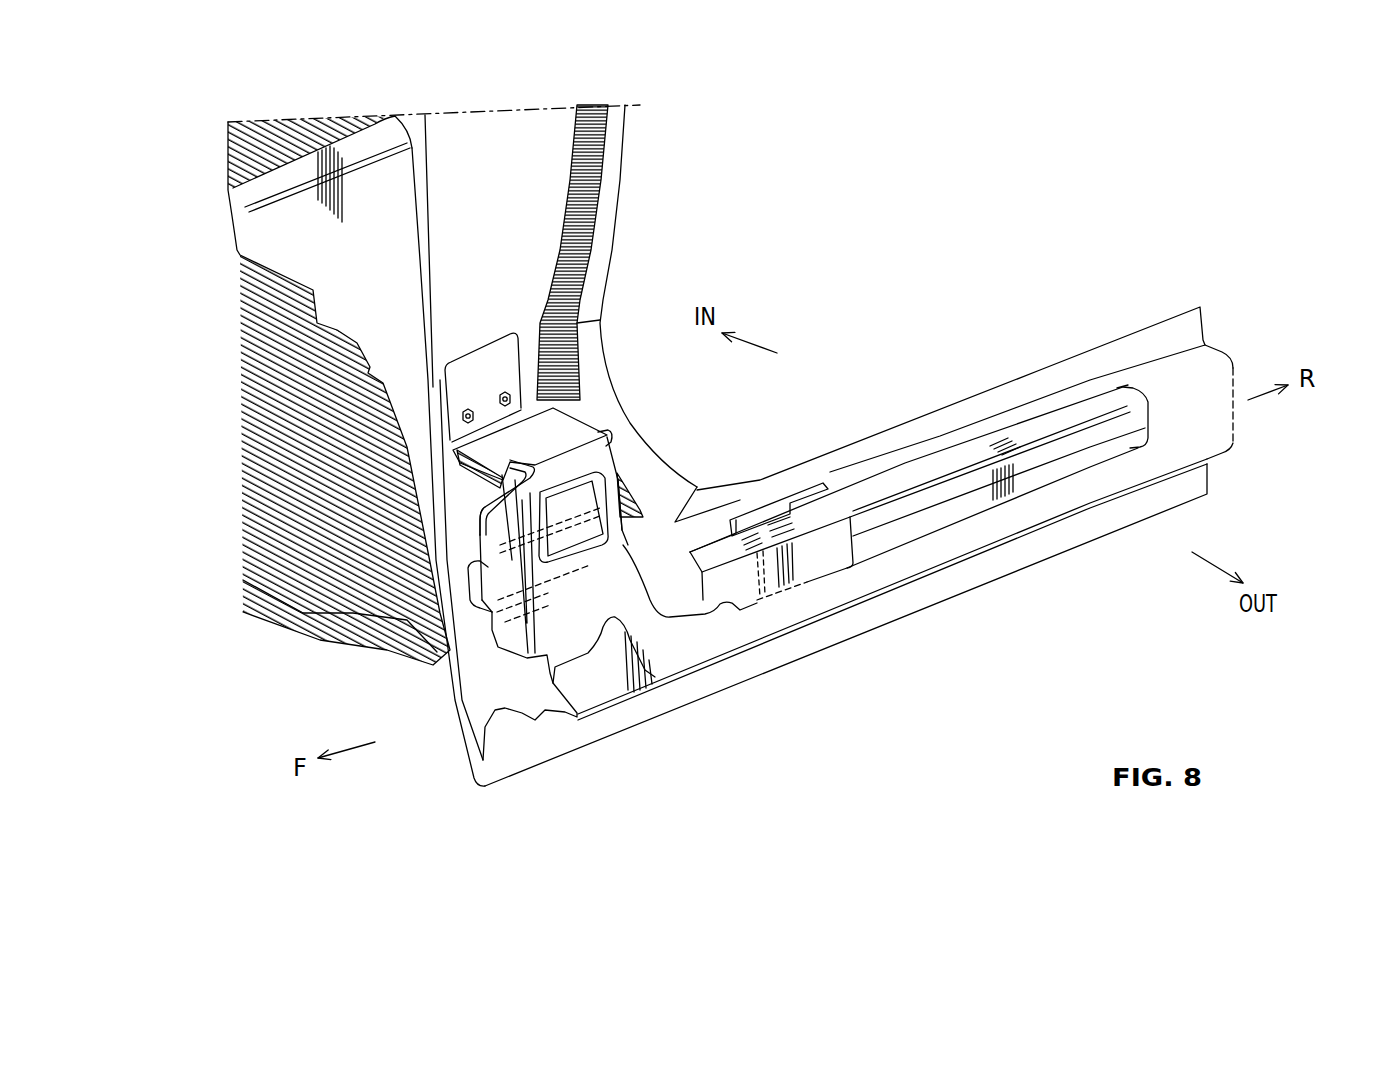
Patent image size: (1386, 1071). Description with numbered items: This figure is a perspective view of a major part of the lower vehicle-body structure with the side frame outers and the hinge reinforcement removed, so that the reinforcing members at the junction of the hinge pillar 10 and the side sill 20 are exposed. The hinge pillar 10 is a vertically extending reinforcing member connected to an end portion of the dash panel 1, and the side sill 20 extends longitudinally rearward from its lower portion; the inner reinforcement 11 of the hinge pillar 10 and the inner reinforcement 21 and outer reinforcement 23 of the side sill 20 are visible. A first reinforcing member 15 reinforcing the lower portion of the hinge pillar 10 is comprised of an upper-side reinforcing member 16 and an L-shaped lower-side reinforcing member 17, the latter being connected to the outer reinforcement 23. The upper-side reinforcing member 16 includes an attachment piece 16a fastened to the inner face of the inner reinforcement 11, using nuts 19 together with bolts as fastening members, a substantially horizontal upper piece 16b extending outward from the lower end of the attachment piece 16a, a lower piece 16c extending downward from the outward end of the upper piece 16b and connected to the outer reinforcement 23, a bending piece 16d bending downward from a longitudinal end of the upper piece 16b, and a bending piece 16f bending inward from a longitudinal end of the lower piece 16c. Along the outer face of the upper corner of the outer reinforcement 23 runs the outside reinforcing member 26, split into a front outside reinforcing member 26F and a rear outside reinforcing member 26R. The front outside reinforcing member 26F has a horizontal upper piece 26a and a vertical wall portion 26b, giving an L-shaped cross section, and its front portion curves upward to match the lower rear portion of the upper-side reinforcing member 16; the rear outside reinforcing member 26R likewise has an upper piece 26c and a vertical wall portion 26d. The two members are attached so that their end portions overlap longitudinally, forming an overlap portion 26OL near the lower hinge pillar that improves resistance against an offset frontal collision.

The dash panel 1 is at (258, 345).
The hinge pillar 10 is at (630, 172).
The inner reinforcement 11 is at (476, 270).
The first reinforcing member 15 is at (466, 530).
The upper-side reinforcing member 16 is at (573, 410).
The attachment piece 16a is at (473, 362).
The upper piece 16b is at (462, 450).
The lower piece 16c is at (613, 490).
The bending piece 16d is at (445, 488).
The bending piece 16f is at (493, 532).
The lower-side reinforcing member 17 is at (483, 614).
The nut 19 is at (467, 408).
The side sill 20 is at (1059, 360).
The inner reinforcement 21 is at (670, 474).
The outer reinforcement 23 is at (896, 568).
The outside reinforcing member 26 is at (818, 362).
The front outside reinforcing member 26F is at (790, 512).
The rear outside reinforcing member 26R is at (905, 463).
The upper piece 26a is at (717, 553).
The vertical wall portion 26b is at (746, 593).
The upper piece 26c is at (982, 450).
The vertical wall portion 26d is at (955, 500).
The overlap portion 26OL is at (812, 588).